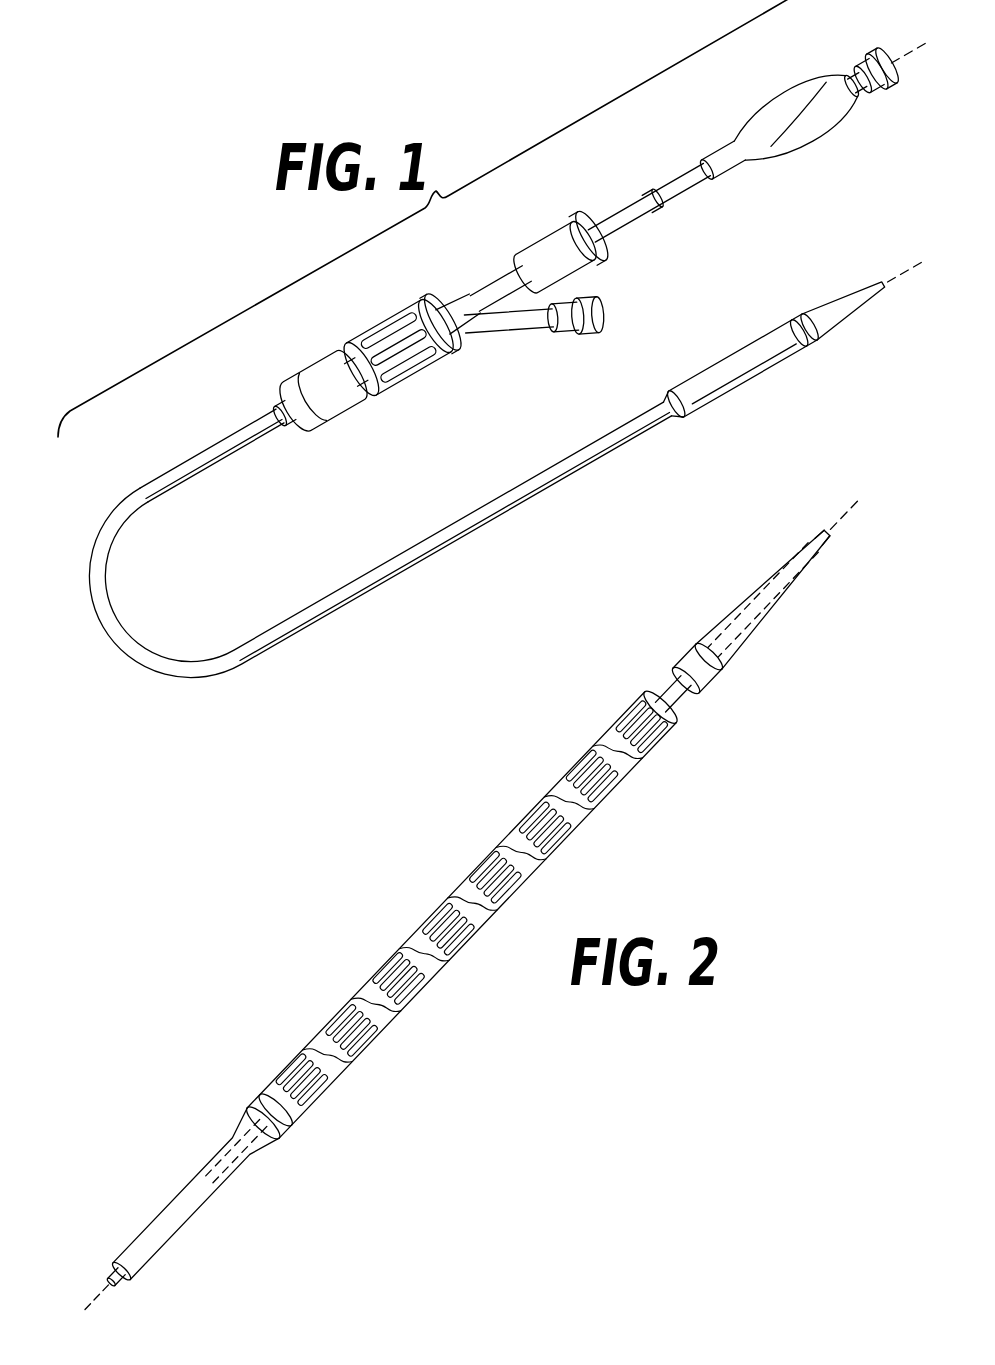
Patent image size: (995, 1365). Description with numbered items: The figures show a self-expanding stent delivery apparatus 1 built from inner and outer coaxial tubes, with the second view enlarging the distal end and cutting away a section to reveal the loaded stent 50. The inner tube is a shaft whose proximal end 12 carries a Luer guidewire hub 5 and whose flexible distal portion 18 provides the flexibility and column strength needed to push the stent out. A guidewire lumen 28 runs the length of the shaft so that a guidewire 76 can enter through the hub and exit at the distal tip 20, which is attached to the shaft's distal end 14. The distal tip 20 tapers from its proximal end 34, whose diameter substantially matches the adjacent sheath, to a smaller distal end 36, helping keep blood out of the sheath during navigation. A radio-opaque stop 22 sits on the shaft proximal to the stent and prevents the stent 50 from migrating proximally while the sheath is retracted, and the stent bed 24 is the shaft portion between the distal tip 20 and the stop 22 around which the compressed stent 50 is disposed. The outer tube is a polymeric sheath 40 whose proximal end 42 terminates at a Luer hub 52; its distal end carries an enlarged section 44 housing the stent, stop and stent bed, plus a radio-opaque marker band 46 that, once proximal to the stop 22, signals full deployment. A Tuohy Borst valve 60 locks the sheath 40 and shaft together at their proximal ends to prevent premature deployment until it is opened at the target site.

In FIG. 1, the self-expanding stent delivery apparatus 1 is at (463, 283).
In FIG. 1, the Luer guidewire hub 5 is at (770, 100).
In FIG. 1, the proximal end of the shaft 12 is at (633, 224).
In FIG. 2, the distal end of the shaft 14 is at (663, 697).
In FIG. 2, the distal portion of the shaft 18 is at (680, 707).
In FIG. 2, the distal tip 20 is at (797, 590).
In FIG. 2, the stop 22 is at (270, 1103).
In FIG. 2, the stent bed 24 is at (330, 1020).
In FIG. 2, the guidewire lumen 28 is at (118, 1282).
In FIG. 2, the proximal end of the distal tip 34 is at (730, 670).
In FIG. 2, the distal end of the distal tip 36 is at (833, 538).
In FIG. 1, the sheath 40 is at (200, 680).
In FIG. 1, the proximal end of the sheath 42 is at (137, 497).
In FIG. 1, the enlarged section 44 is at (730, 353).
In FIG. 2, the enlarged section 44 is at (303, 1070).
In FIG. 1, the radio-opaque marker band 46 is at (800, 352).
In FIG. 2, the stent 50 is at (473, 867).
In FIG. 1, the Luer hub 52 is at (290, 362).
In FIG. 1, the Tuohy Borst valve 60 is at (557, 223).
In FIG. 1, the guidewire 76 is at (890, 58).